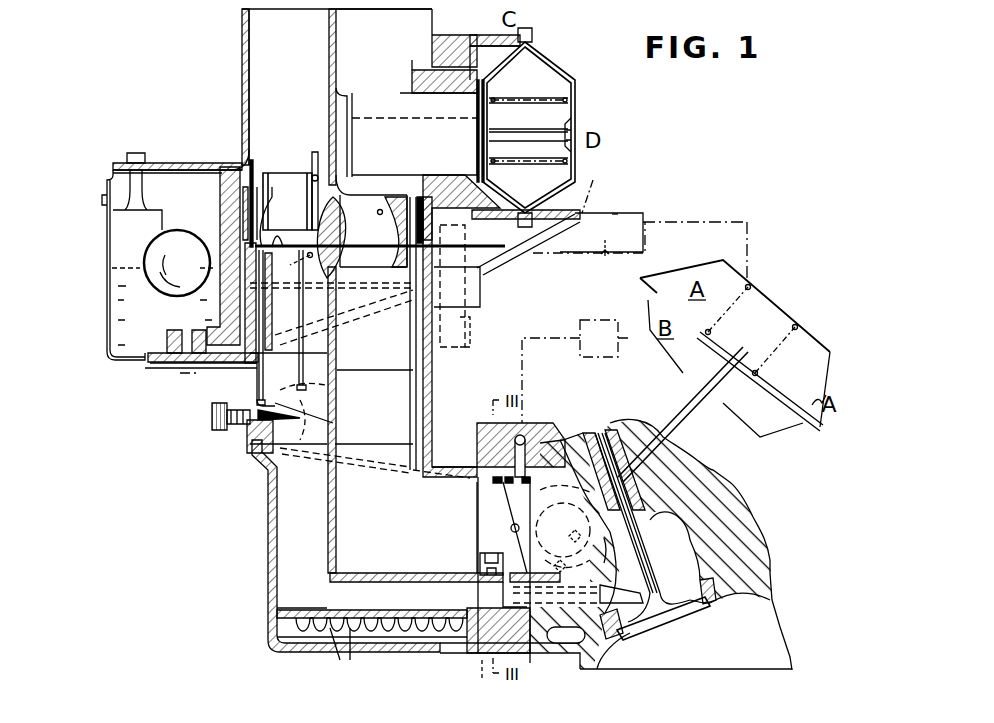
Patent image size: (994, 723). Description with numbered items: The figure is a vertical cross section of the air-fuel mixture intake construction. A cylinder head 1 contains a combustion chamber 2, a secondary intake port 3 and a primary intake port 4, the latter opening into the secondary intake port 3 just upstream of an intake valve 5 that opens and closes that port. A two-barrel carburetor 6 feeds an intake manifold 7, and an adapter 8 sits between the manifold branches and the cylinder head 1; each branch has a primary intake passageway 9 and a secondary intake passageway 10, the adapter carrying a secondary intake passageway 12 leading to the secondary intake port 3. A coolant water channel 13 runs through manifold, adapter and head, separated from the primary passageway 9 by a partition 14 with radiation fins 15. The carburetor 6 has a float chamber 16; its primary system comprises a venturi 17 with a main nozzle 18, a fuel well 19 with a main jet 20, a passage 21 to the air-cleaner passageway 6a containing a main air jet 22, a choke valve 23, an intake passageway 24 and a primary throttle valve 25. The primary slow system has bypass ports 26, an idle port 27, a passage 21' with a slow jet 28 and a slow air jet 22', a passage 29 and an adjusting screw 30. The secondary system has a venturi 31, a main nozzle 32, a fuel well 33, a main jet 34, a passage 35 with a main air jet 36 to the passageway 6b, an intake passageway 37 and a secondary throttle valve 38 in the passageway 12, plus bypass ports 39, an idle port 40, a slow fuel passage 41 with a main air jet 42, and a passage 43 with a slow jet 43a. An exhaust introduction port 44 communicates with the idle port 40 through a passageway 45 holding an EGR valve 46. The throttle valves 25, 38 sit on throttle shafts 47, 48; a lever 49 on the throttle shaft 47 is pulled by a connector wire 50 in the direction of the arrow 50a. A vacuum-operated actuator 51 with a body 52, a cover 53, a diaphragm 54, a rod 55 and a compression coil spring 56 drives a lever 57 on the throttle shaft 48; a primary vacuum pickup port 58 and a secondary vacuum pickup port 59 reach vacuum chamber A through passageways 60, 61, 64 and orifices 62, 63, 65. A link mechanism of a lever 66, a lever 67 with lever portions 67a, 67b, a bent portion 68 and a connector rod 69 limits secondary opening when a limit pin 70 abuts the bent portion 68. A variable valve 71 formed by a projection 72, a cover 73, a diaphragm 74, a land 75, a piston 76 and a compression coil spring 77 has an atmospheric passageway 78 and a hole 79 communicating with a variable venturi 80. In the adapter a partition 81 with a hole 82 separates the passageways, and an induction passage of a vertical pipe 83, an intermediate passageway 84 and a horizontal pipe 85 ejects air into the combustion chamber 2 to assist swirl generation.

The cylinder head 1 is at (760, 580).
The combustion chamber 2 is at (718, 626).
The secondary intake port 3 is at (675, 535).
The primary intake port 4 is at (592, 640).
The intake valve 5 is at (660, 622).
The two-barrel carburetor 6 is at (239, 57).
The passageway 6a is at (295, 110).
The passageway 6b is at (358, 192).
The intake manifold 7 is at (268, 573).
The adapter 8 is at (528, 665).
The primary intake passageway 9 is at (308, 593).
The secondary intake passageway 10 is at (387, 537).
The secondary intake passageway 12 is at (483, 540).
The coolant water channel 13 is at (413, 640).
The partition 14 is at (353, 620).
The radiation fins 15 is at (348, 655).
The float chamber 16 is at (190, 213).
The venturi 17 is at (268, 228).
The main nozzle 18 is at (284, 243).
The fuel well 19 is at (264, 302).
The main jet 20 is at (220, 317).
The passage 21 is at (287, 201).
The passage 21' is at (214, 256).
The main air jet 22 is at (261, 192).
The slow air jet 22' is at (226, 145).
The choke valve 23 is at (313, 181).
The intake passageway 24 is at (312, 353).
The primary throttle valve 25 is at (330, 420).
The bypass ports 26 is at (260, 400).
The idle port 27 is at (247, 438).
The slow jet 28 is at (210, 258).
The passage 29 is at (268, 322).
The screw 30 is at (212, 413).
The venturi 31 is at (373, 221).
The main nozzle 32 is at (336, 275).
The fuel well 33 is at (472, 322).
The main jet 34 is at (175, 317).
The passage 35 is at (461, 207).
The main air jet 36 is at (398, 197).
The intake passageway 37 is at (390, 307).
The secondary throttle valve 38 is at (505, 527).
The bypass ports 39 is at (493, 483).
The idle port 40 is at (490, 492).
The slow fuel passage 41 is at (433, 400).
The main air jet 42 is at (428, 197).
The passage 43 is at (466, 238).
The slow jet 43a is at (480, 292).
The exhaust introduction port 44 is at (540, 440).
The passageway 45 is at (525, 395).
The EGR valve 46 is at (610, 358).
The throttle shaft 47 is at (305, 408).
The throttle shaft 48 is at (490, 533).
The lever 49 is at (325, 385).
The connector wire 50 is at (520, 263).
The arrow 50a is at (520, 255).
The vacuum-operated actuator 51 is at (779, 300).
The body 52 is at (763, 436).
The cover 53 is at (817, 343).
The diaphragm 54 is at (777, 400).
The rod 55 is at (678, 415).
The compression coil spring 56 is at (775, 360).
The lever 57 is at (440, 586).
The primary vacuum pickup port 58 is at (306, 258).
The secondary vacuum pickup port 59 is at (377, 213).
The passageway 60 is at (737, 221).
The passageway 61 is at (560, 252).
The orifice 62 is at (672, 214).
The orifice 63 is at (605, 262).
The passageway 64 is at (601, 204).
The orifice 65 is at (607, 205).
The lever 66 is at (286, 452).
The lever 67 is at (618, 551).
The lever portion 67a is at (588, 543).
The lever portion 67b is at (580, 562).
The bent portion 68 is at (567, 645).
The connector rod 69 is at (385, 468).
The limit pin 70 is at (563, 526).
The variable valve 71 is at (576, 130).
The projection 72 is at (478, 44).
The cover 73 is at (552, 66).
The diaphragm 74 is at (497, 52).
The land 75 is at (342, 92).
The piston 76 is at (388, 100).
The compression coil spring 77 is at (545, 100).
The passageway 78 is at (445, 50).
The hole 79 is at (412, 120).
The variable venturi 80 is at (350, 94).
The partition 81 is at (480, 596).
The hole 82 is at (525, 587).
The vertical pipe 83 is at (480, 556).
The intermediate passageway 84 is at (475, 681).
The horizontal pipe 85 is at (635, 587).